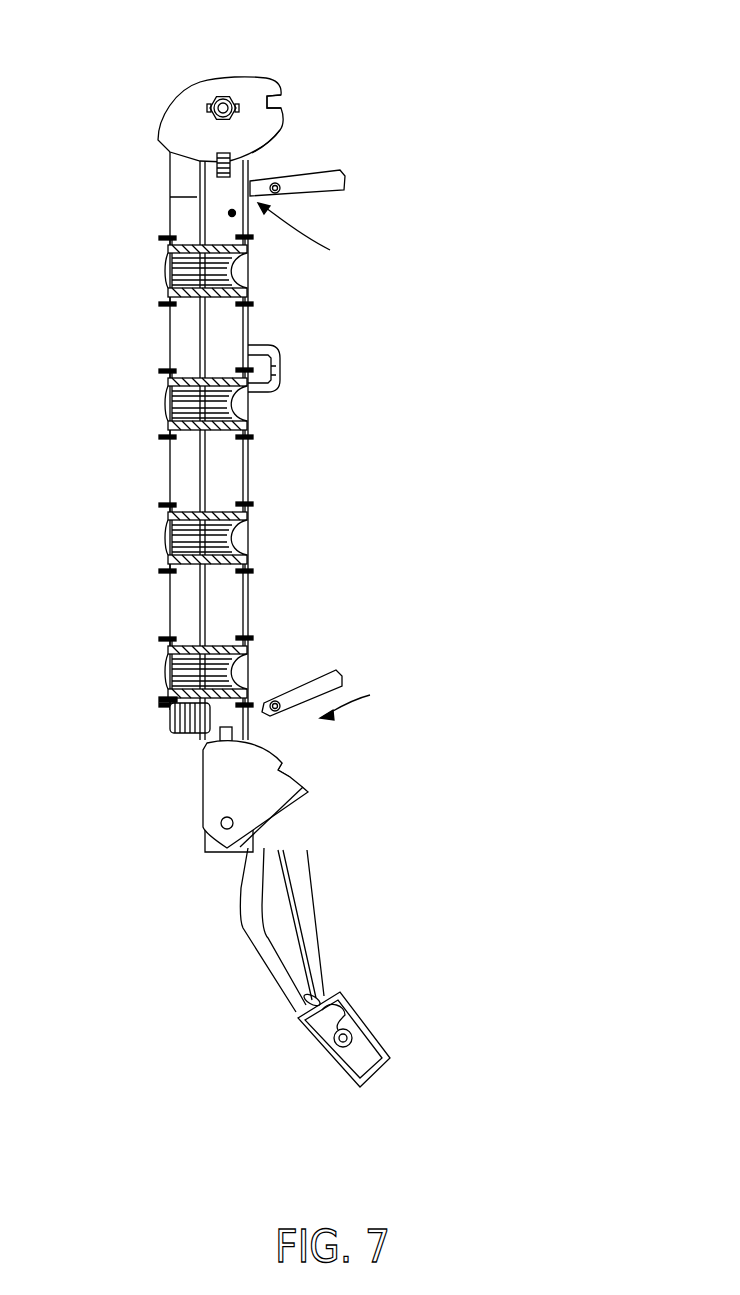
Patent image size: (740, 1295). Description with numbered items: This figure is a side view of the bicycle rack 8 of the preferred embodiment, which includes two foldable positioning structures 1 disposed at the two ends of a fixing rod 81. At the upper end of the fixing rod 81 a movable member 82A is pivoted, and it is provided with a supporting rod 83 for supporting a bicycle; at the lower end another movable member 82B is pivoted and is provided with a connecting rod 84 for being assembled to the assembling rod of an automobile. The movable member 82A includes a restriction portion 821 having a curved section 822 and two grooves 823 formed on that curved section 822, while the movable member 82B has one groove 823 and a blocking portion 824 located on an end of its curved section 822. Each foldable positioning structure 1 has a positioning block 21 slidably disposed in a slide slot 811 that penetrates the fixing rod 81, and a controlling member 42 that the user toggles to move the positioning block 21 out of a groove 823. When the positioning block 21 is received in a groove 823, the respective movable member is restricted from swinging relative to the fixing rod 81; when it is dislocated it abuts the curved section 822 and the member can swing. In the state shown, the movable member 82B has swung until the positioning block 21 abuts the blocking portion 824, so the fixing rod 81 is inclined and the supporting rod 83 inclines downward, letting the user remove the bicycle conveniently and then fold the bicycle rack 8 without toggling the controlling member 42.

The foldable positioning structure 1 is at (326, 461).
The bicycle rack 8 is at (326, 369).
The positioning block 21 is at (215, 168).
The controlling member 42 is at (310, 183).
The fixing rod 81 is at (228, 595).
The movable member 82A is at (226, 90).
The movable member 82B is at (265, 760).
The supporting rod 83 is at (183, 343).
The connecting rod 84 is at (258, 925).
The slide slot 811 is at (163, 697).
The restriction portion 821 is at (258, 128).
The curved section 822 is at (272, 148).
The groove 823 is at (280, 100).
The blocking portion 824 is at (213, 740).